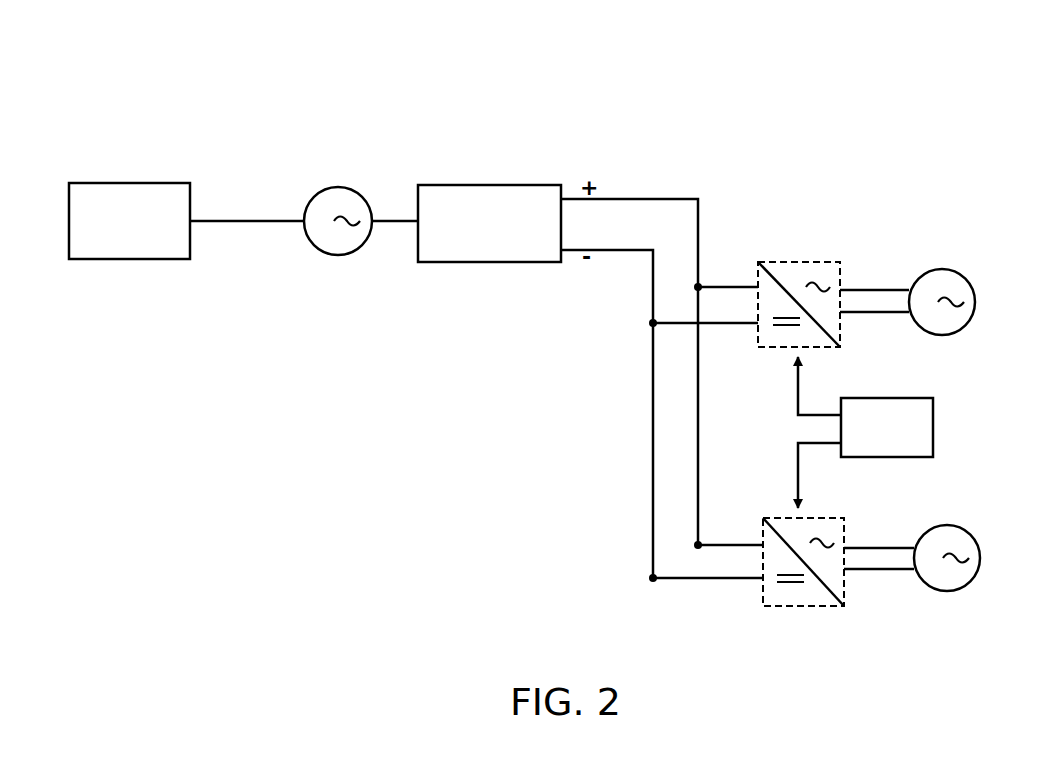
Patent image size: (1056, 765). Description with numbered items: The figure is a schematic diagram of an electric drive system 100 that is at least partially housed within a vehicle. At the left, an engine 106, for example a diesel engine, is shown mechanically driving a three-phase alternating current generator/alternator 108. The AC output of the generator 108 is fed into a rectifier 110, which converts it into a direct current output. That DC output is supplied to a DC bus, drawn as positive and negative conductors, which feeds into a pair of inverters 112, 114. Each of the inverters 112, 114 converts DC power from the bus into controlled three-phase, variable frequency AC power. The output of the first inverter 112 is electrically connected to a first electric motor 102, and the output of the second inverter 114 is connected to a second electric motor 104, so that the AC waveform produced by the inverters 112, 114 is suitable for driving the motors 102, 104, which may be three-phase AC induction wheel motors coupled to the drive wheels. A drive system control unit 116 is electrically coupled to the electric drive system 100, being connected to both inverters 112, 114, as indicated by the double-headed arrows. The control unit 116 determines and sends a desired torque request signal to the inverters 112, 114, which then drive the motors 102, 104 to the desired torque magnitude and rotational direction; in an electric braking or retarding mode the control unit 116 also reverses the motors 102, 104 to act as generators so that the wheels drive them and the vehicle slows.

The electric drive system 100 is at (733, 97).
The electric motor 102 is at (942, 268).
The electric motor 104 is at (945, 592).
The engine 106 is at (129, 179).
The three-phase alternating current generator/alternator 108 is at (336, 192).
The rectifier 110 is at (486, 187).
The inverter 112 is at (805, 262).
The inverter 114 is at (803, 608).
The drive system control unit 116 is at (933, 425).